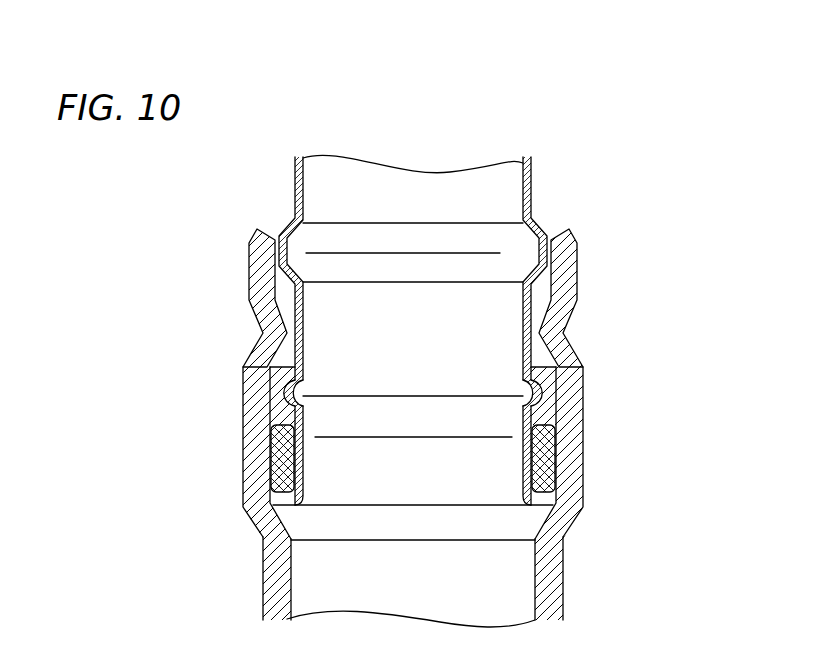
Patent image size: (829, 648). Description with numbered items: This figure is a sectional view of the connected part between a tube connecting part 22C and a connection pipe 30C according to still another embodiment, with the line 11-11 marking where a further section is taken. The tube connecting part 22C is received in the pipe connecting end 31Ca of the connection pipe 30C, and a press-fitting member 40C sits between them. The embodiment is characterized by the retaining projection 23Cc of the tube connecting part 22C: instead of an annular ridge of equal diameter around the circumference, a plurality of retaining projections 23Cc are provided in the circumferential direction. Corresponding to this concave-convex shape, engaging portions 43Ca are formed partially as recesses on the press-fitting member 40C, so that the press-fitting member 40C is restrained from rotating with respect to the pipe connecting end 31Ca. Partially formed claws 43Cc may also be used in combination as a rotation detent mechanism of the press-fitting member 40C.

The tube connecting part 22C is at (533, 182).
The retaining projection 23Cc is at (548, 388).
The connection pipe 30C is at (558, 585).
The pipe connecting end 31Ca is at (580, 485).
The press-fitting member 40C is at (562, 434).
The engaging portion 43Ca is at (548, 414).
The claw 43Cc is at (570, 346).
The line 11- 11 is at (218, 395).